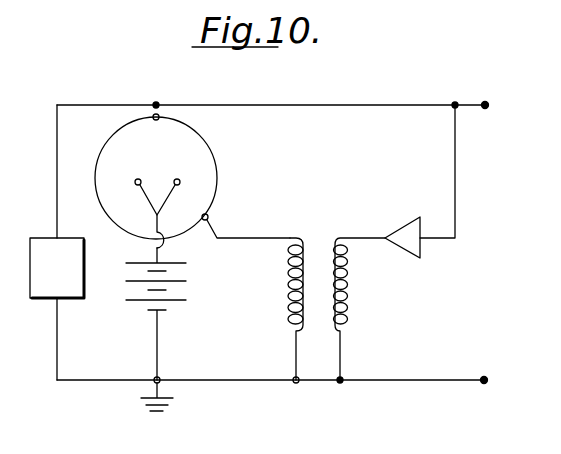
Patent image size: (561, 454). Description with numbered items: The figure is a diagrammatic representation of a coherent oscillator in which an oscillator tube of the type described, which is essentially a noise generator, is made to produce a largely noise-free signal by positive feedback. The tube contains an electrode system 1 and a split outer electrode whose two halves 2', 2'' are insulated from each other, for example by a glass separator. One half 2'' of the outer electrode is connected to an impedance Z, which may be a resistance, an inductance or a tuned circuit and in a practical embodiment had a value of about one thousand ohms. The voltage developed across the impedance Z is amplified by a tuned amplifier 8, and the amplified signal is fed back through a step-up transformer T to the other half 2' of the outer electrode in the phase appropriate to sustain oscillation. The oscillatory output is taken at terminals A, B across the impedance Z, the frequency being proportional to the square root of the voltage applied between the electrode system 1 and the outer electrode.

The electrode system 1 is at (149, 182).
The half of outer electrode 2' is at (246, 211).
The half of outer electrode 2'' is at (174, 176).
The tuned amplifier 8 is at (405, 243).
The impedance Z is at (57, 268).
The transformer T is at (336, 294).
The terminal A is at (497, 105).
The terminal B is at (496, 380).